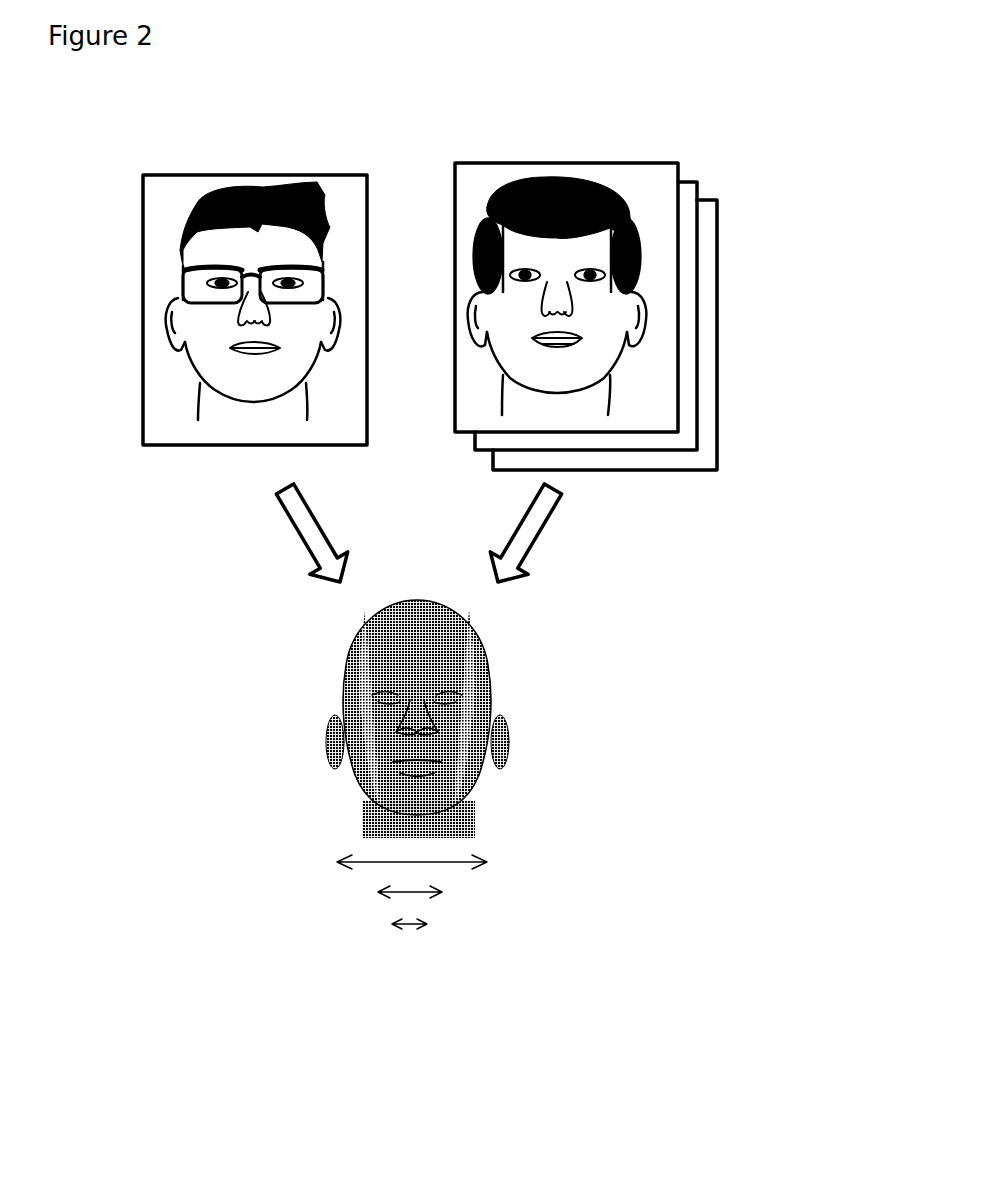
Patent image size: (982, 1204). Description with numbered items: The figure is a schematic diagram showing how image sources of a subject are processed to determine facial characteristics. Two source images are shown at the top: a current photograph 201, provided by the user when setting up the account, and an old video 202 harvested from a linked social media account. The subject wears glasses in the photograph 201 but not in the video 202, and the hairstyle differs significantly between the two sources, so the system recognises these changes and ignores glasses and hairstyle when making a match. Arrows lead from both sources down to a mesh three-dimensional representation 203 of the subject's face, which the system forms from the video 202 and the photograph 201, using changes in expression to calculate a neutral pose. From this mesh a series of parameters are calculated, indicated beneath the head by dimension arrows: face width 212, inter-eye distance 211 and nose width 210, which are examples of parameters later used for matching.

The current photograph 201 is at (170, 215).
The old video 202 is at (648, 212).
The mesh 3D representation 203 is at (468, 660).
The nose width 210 is at (410, 928).
The inter-eye distance 211 is at (430, 898).
The face width 212 is at (442, 862).